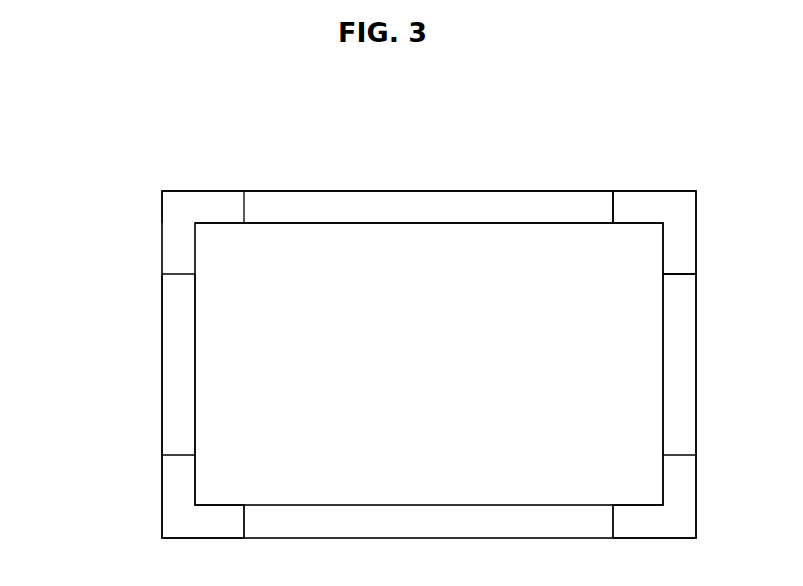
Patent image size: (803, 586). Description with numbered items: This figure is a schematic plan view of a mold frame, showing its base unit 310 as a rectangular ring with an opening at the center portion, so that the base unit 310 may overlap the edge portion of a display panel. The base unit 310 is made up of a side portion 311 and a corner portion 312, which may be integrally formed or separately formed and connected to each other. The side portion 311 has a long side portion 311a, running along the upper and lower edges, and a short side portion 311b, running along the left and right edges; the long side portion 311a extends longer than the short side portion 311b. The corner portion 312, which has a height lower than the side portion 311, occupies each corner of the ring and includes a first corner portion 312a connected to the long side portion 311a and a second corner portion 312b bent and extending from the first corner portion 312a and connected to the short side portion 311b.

The base unit 310 is at (215, 98).
The side portion 311 is at (80, 165).
The long side portion 311a is at (280, 196).
The short side portion 311b is at (178, 303).
The corner portion 312 is at (703, 138).
The first corner portion 312a is at (639, 205).
The second corner portion 312b is at (683, 254).